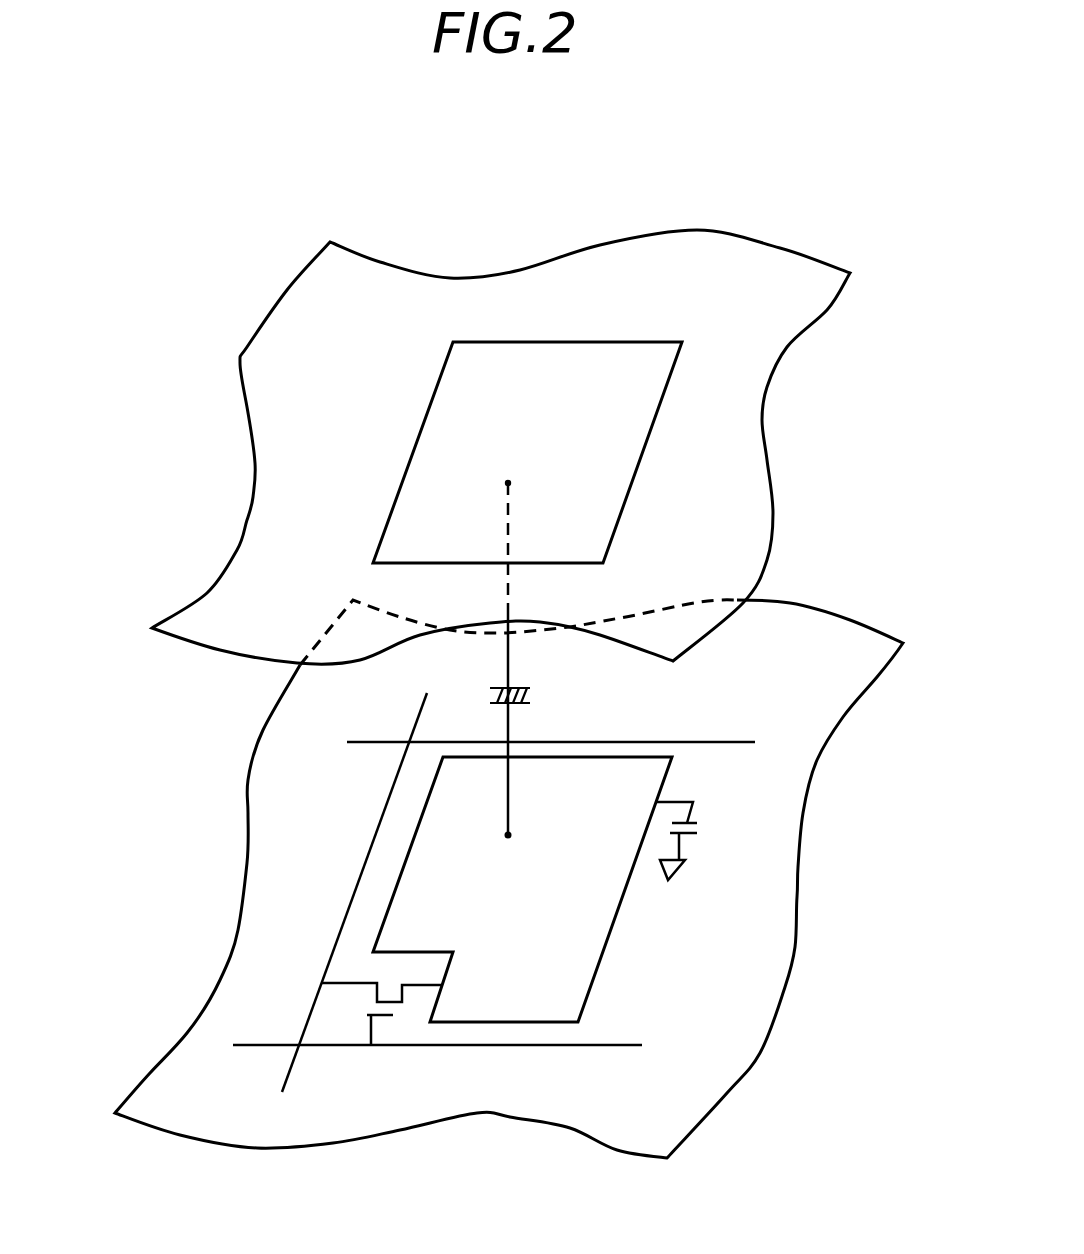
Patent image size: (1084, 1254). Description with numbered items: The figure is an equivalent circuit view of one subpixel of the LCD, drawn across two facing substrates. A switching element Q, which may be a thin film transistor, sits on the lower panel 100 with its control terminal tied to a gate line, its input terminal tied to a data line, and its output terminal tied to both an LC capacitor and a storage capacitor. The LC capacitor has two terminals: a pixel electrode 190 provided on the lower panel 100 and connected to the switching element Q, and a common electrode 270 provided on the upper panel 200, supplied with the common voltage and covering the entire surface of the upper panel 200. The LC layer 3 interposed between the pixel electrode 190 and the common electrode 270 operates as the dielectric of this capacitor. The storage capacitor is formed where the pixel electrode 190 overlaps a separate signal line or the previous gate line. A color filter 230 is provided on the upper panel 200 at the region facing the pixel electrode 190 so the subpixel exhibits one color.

The lower panel 100 is at (818, 852).
The upper panel 200 is at (528, 447).
The common electrode 270 is at (765, 418).
The color filter 230 is at (637, 470).
The pixel electrode 190 is at (605, 948).
The LC layer 3 is at (136, 755).